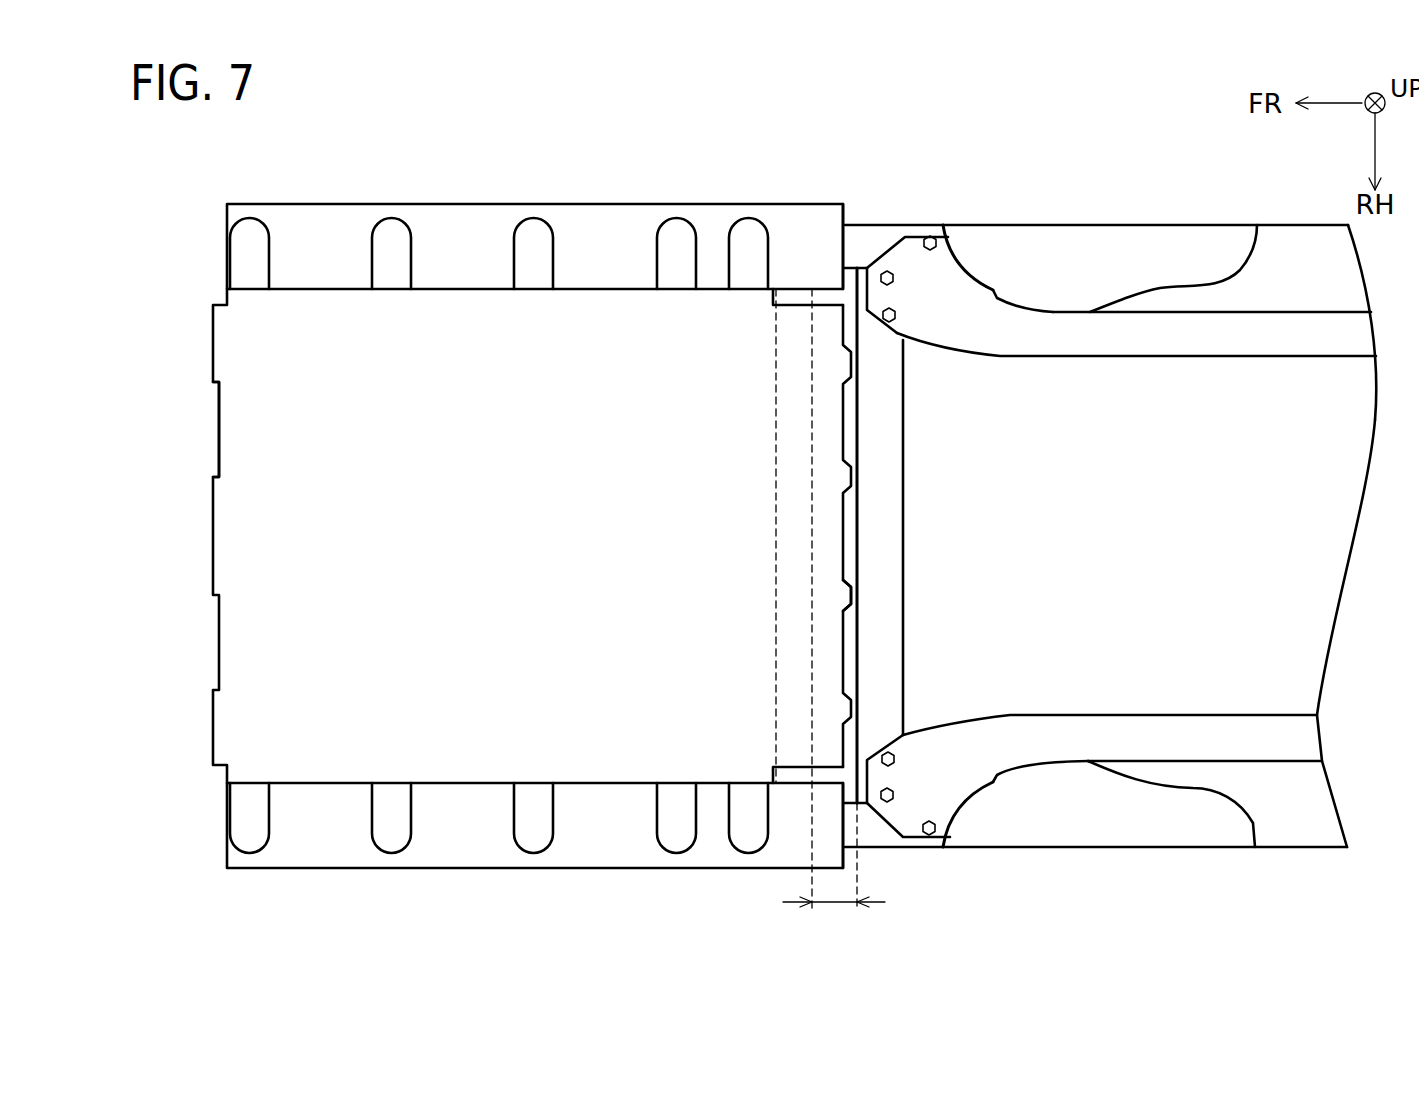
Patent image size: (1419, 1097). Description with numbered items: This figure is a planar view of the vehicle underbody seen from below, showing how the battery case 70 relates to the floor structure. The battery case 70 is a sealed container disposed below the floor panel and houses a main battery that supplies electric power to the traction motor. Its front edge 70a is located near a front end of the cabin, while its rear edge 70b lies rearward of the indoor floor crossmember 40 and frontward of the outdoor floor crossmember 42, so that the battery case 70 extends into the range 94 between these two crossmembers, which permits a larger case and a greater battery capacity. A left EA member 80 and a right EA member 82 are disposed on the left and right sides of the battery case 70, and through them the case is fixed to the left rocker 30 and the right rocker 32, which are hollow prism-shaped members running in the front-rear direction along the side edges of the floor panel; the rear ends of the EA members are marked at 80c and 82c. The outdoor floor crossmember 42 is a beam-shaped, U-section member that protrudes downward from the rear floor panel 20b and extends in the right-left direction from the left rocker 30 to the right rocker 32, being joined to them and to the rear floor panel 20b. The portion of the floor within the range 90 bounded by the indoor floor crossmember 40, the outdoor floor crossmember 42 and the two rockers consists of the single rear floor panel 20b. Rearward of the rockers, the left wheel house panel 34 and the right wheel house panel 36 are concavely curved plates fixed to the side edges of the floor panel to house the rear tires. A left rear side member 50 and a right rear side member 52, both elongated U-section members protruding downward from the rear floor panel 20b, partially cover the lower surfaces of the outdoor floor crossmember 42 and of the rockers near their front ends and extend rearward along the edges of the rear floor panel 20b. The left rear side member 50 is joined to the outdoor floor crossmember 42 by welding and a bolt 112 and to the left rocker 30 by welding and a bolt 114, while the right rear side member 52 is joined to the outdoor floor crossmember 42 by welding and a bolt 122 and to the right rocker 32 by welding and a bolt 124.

The rear floor panel 20b is at (850, 558).
The left rocker 30 is at (860, 247).
The right rocker 32 is at (900, 837).
The left wheel house panel 34 is at (1065, 252).
The right wheel house panel 36 is at (1193, 820).
The indoor floor crossmember 40 is at (792, 547).
The outdoor floor crossmember 42 is at (868, 527).
The left rear side member 50 is at (1152, 330).
The right rear side member 52 is at (1262, 742).
The battery case 70 is at (245, 652).
The front edge of the battery case 70a is at (212, 523).
The rear edge of the battery case 70b is at (848, 274).
The left EA member 80 is at (462, 228).
The rear end of upper reinforcement frame 80c is at (851, 240).
The right EA member 82 is at (462, 840).
The rear end of lower reinforcement frame 82c is at (862, 855).
The range 90 is at (880, 578).
The range 94 is at (830, 904).
The bolt 112 is at (889, 308).
The bolt 114 is at (930, 236).
The bolt 122 is at (895, 759).
The bolt 124 is at (893, 795).